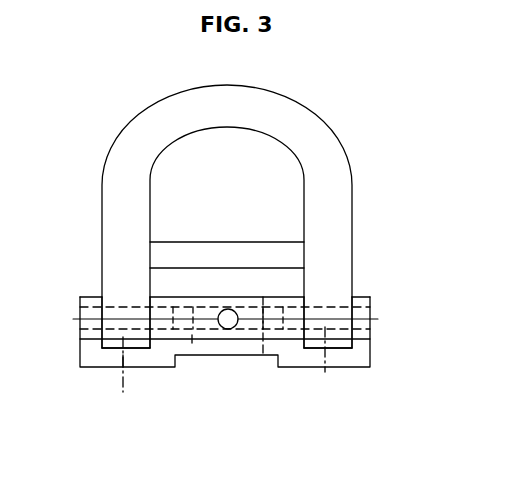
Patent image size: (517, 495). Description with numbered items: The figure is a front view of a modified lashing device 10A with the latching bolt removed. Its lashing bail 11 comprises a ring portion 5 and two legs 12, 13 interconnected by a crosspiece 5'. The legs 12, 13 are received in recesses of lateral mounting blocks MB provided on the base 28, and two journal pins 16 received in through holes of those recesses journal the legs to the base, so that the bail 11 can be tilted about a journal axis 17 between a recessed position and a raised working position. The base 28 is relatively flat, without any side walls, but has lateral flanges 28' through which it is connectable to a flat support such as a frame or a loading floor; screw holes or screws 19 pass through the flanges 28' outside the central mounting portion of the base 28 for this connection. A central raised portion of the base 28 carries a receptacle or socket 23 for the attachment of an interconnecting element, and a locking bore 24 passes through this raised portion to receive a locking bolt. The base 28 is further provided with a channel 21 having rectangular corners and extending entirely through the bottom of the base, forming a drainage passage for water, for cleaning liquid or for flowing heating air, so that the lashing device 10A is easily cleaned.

The lashing bail 11 is at (288, 82).
The ring portion 5 is at (251, 217).
The crosspiece 5' is at (227, 228).
The leg 13 is at (122, 297).
The leg 12 is at (333, 295).
The lashing device 10A is at (398, 260).
The journal axis 17 is at (373, 322).
The base 28 is at (279, 325).
The lateral flanges 28' is at (212, 299).
The journal pins 16 is at (358, 325).
The locking bore 24 is at (223, 329).
The channel 21 is at (270, 363).
The screw holes or screws 19 is at (123, 392).
The receptacle or socket 23 is at (203, 327).
The mounting blocks MB is at (292, 289).